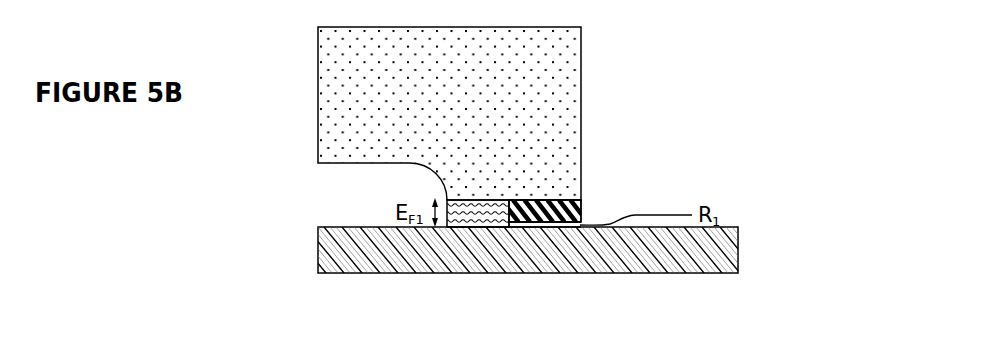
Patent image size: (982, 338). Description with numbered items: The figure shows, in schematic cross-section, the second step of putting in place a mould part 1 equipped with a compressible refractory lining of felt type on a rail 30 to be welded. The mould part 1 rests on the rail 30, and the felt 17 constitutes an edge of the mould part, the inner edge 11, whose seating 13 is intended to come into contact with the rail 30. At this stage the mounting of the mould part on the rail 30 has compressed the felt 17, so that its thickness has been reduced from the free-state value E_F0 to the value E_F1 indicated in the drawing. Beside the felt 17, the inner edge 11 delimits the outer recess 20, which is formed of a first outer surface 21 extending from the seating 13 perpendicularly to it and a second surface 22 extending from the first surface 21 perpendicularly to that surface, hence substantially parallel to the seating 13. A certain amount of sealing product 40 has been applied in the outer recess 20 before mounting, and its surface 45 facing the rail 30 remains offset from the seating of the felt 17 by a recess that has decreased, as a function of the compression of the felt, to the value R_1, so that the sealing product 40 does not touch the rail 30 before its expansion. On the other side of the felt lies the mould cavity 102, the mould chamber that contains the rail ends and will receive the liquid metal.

The mould part 1 is at (560, 113).
The inner edge 11 is at (458, 222).
The felt 17 is at (457, 272).
The seating 13 is at (476, 222).
The first outer surface 21 is at (508, 224).
The surface of the sealing product 45 is at (548, 223).
The second surface 22 is at (540, 200).
The outer recess 20 is at (580, 198).
The sealing product 40 is at (577, 213).
The rail 30 is at (728, 252).
The mould cavity 102 is at (378, 207).